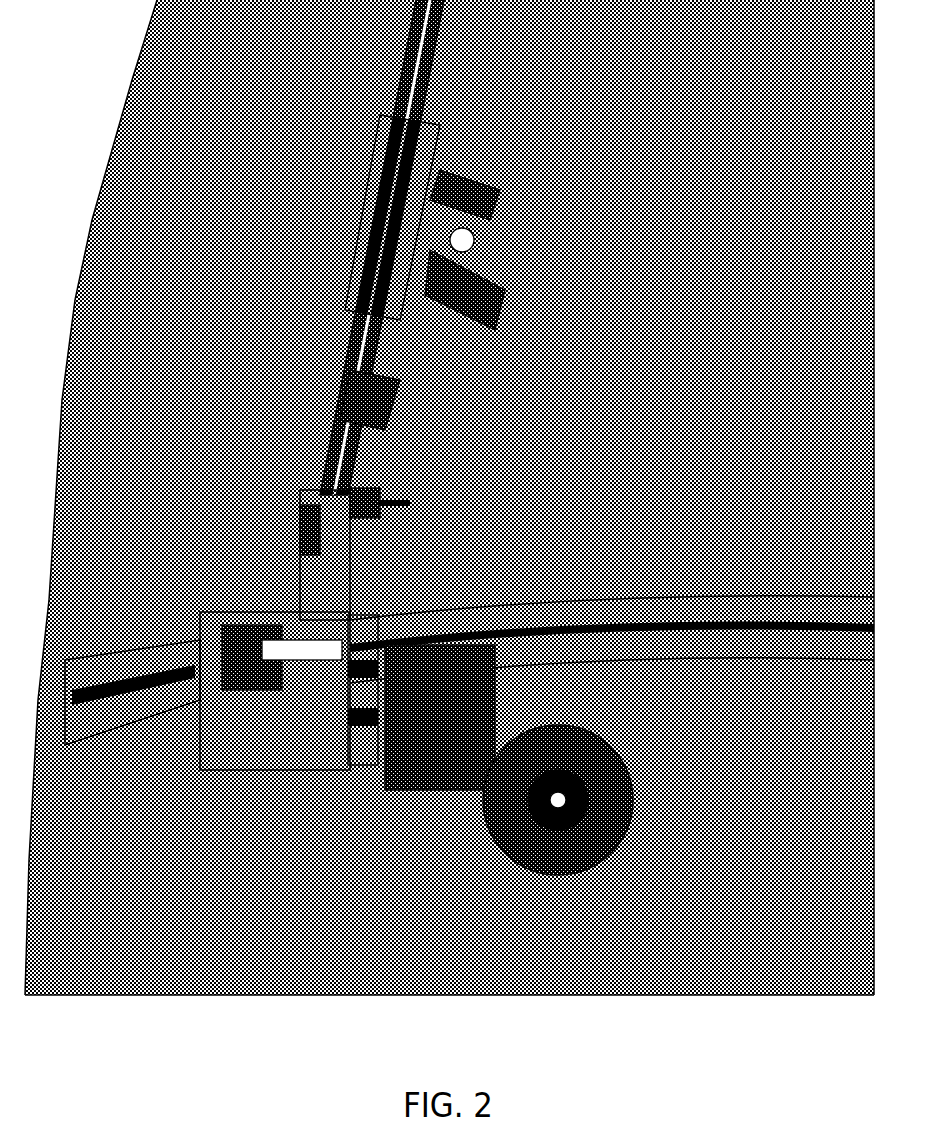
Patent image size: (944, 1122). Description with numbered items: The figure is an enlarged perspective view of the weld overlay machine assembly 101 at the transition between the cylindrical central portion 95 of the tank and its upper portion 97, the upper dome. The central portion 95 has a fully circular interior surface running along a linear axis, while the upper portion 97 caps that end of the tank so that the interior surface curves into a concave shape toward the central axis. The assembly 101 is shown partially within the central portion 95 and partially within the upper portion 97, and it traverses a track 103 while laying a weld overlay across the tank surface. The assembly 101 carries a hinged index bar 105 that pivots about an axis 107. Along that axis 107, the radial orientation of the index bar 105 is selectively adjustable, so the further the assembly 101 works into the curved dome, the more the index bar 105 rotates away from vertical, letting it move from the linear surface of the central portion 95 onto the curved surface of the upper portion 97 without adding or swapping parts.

The central portion 95 is at (449, 800).
The upper portion 97 is at (456, 350).
The weld overlay machine assembly 101 is at (215, 533).
The track 103 is at (138, 738).
The index bar 105 is at (285, 327).
The axis 107 is at (220, 548).